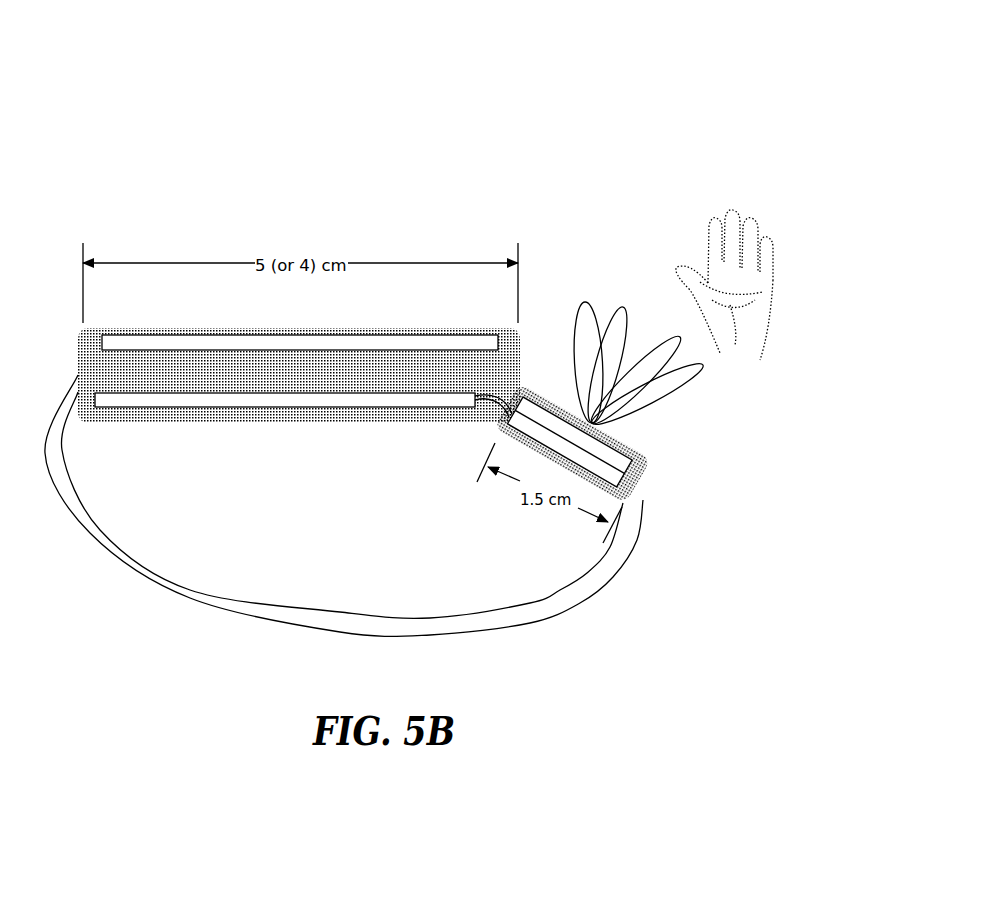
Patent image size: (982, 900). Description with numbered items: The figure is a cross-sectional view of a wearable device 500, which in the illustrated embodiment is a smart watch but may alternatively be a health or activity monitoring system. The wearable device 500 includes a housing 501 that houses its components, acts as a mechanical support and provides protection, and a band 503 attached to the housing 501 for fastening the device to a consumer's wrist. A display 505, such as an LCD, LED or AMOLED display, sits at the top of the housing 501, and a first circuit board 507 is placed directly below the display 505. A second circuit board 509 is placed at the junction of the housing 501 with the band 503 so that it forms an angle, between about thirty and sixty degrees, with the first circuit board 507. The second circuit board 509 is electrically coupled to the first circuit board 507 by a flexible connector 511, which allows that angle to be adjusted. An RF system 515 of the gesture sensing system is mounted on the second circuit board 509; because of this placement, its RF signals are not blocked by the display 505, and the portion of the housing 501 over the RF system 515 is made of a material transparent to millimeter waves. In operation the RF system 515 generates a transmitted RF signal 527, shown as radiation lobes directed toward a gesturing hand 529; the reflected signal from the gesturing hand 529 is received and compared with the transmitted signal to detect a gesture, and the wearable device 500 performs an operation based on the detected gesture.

The wearable device 500 is at (597, 70).
The housing 501 is at (148, 422).
The band 503 is at (253, 607).
The display 505 is at (190, 347).
The first circuit board 507 is at (217, 401).
The second circuit board 509 is at (645, 492).
The flexible connector 511 is at (505, 412).
The RF system 515 is at (633, 461).
The transmitted RF signal 527 is at (590, 303).
The gesturing hand 529 is at (713, 222).